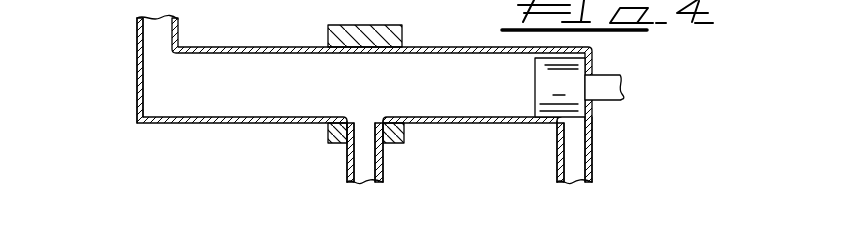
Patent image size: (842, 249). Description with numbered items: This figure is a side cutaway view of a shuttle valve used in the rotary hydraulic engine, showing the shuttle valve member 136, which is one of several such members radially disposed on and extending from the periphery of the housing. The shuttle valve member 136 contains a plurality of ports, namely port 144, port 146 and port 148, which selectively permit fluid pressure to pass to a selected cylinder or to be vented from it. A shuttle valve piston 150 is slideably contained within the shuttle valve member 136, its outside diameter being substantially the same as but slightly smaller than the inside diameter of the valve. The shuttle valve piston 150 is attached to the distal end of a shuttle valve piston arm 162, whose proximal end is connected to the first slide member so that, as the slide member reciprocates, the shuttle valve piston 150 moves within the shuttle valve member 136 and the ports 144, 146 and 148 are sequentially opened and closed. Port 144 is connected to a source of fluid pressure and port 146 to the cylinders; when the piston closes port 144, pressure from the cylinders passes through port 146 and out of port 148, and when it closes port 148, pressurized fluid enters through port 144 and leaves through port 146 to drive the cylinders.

The shuttle valve member 136 is at (287, 123).
The port 148 is at (137, 27).
The port 146 is at (383, 173).
The port 144 is at (592, 164).
The shuttle valve piston 150 is at (568, 95).
The shuttle valve piston arm 162 is at (617, 74).